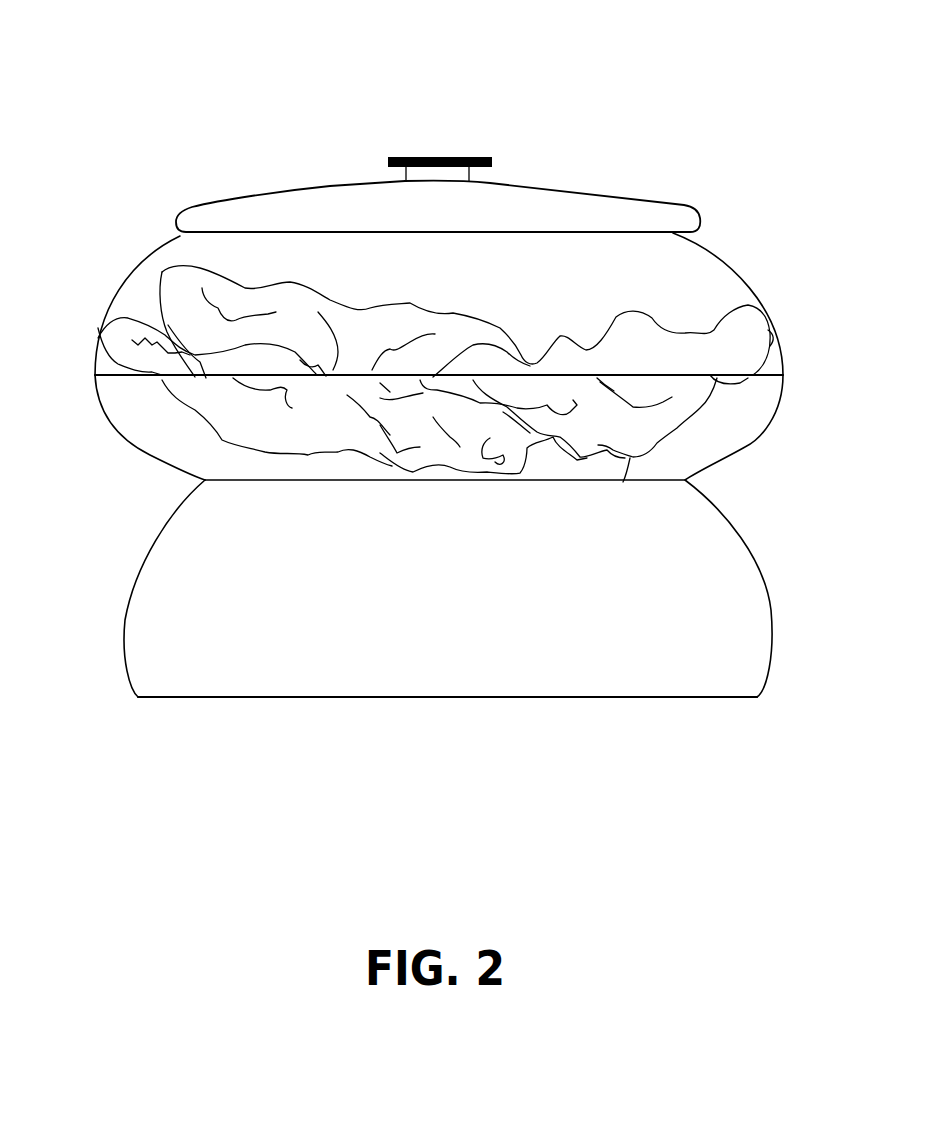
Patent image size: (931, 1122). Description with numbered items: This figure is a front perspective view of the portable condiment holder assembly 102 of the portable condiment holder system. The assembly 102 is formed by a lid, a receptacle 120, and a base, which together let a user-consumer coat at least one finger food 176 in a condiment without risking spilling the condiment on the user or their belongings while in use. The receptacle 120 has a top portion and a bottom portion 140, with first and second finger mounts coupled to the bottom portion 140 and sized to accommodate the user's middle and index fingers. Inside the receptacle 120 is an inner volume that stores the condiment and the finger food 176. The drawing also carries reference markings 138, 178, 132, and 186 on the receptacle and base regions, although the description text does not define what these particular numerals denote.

The portable condiment holder assembly 102 is at (530, 118).
The receptacle 120 is at (717, 251).
The vessel 138 is at (181, 259).
The fill line 178 is at (549, 277).
The finger food 176 is at (138, 313).
The interior cavity 132 is at (749, 416).
The bottom portion 140 is at (150, 419).
The base 186 is at (750, 556).